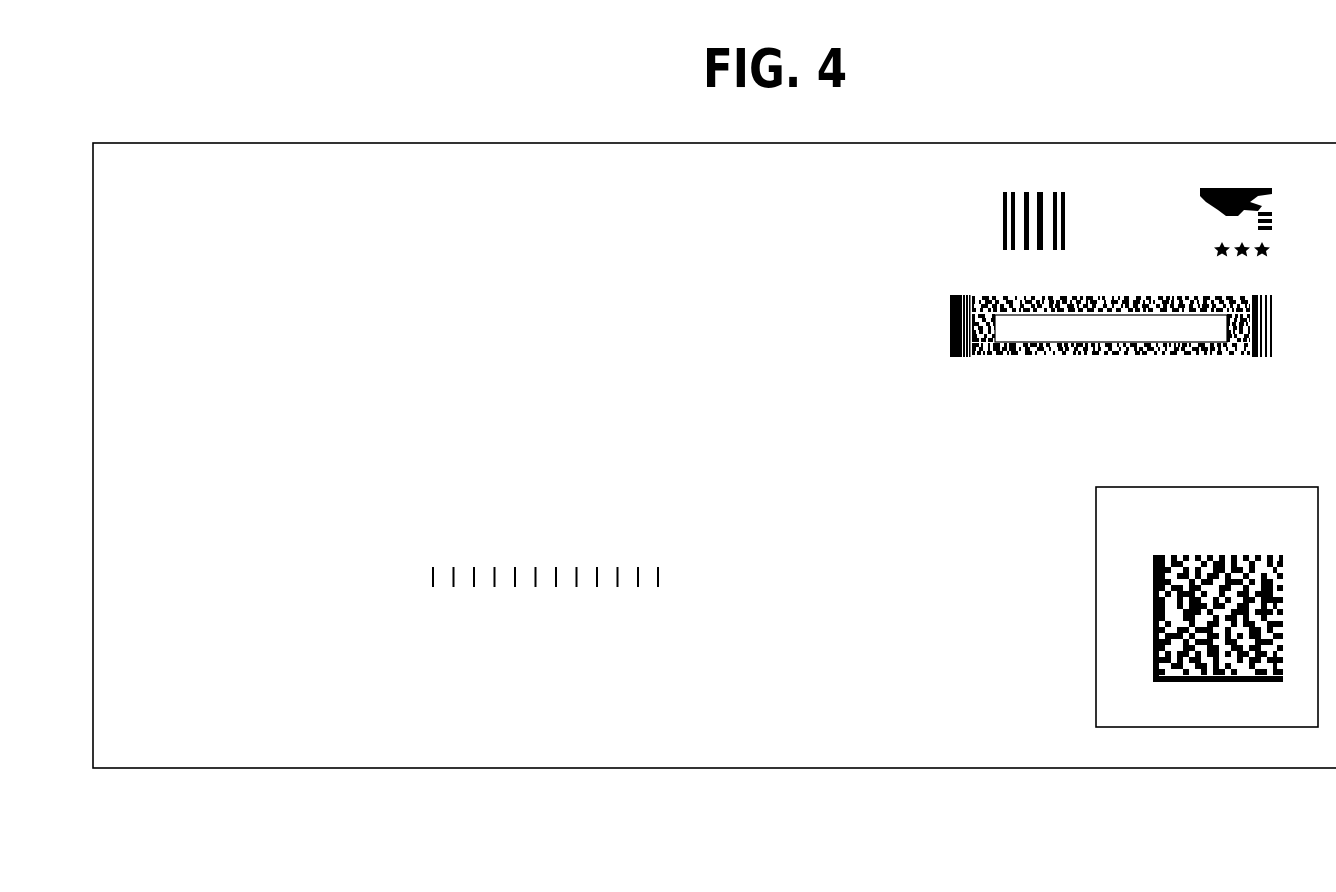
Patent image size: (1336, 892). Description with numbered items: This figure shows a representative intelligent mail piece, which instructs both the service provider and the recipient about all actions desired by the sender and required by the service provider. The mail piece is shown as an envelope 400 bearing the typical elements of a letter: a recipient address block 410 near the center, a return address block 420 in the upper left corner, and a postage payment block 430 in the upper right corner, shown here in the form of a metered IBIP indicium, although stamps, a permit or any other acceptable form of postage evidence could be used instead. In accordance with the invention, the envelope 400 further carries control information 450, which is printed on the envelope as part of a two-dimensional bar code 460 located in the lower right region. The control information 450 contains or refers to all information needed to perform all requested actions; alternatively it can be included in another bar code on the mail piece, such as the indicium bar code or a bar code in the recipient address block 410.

The envelope 400 is at (717, 768).
The recipient address block 410 is at (635, 468).
The return address block 420 is at (318, 208).
The postage payment block 430 is at (1110, 178).
The control information 450 is at (1142, 620).
The 2-D bar code 460 is at (1200, 555).